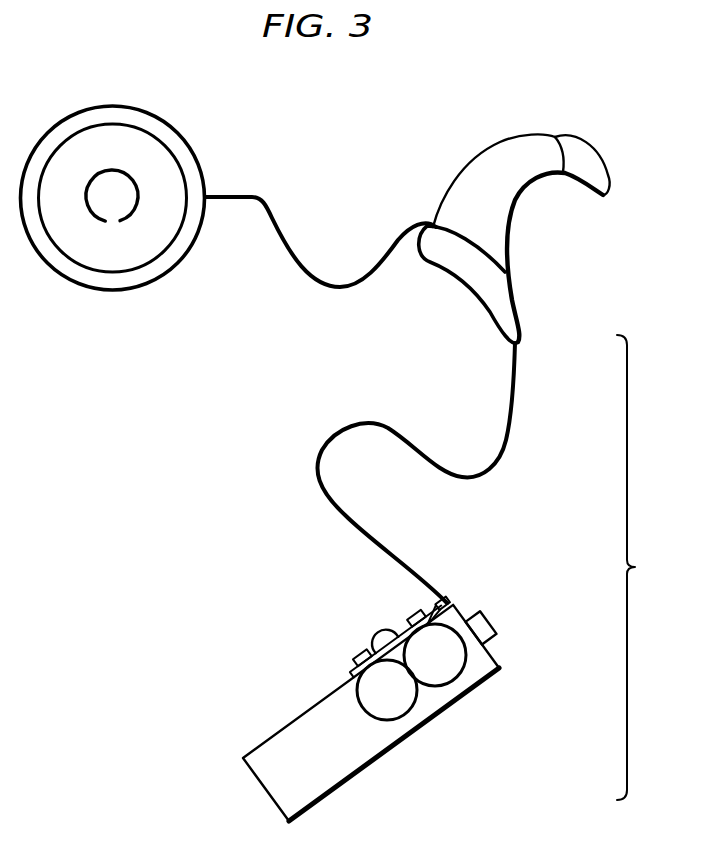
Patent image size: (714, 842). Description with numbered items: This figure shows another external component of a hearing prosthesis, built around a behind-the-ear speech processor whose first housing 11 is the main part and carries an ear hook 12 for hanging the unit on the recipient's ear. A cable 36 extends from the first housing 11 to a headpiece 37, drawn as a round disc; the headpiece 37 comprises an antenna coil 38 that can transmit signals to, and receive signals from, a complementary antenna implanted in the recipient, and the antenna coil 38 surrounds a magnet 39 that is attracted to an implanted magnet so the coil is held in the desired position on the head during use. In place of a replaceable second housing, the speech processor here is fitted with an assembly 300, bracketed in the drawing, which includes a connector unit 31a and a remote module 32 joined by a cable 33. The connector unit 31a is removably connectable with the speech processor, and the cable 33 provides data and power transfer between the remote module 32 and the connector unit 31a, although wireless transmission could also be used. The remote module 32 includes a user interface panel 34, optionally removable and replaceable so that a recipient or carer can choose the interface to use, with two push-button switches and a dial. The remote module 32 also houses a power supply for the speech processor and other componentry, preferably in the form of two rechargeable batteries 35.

The first housing 11 is at (482, 163).
The ear hook 12 is at (597, 157).
The connector unit 31a is at (450, 277).
The remote module 32 is at (372, 762).
The cable 33 is at (505, 455).
The user interface panel 34 is at (355, 632).
The rechargeable batteries 35 is at (393, 697).
The cable 36 is at (260, 198).
The headpiece 37 is at (102, 104).
The antenna coil 38 is at (167, 143).
The magnet 39 is at (115, 200).
The assembly 300 is at (644, 567).